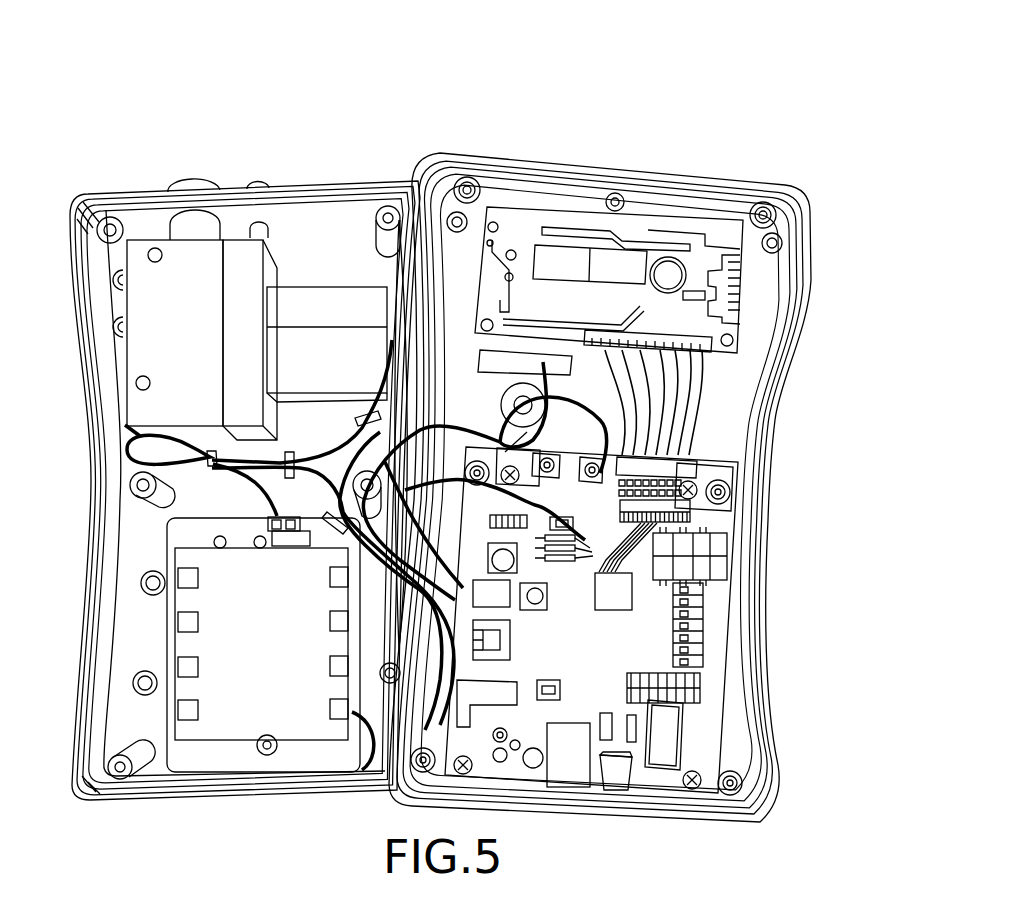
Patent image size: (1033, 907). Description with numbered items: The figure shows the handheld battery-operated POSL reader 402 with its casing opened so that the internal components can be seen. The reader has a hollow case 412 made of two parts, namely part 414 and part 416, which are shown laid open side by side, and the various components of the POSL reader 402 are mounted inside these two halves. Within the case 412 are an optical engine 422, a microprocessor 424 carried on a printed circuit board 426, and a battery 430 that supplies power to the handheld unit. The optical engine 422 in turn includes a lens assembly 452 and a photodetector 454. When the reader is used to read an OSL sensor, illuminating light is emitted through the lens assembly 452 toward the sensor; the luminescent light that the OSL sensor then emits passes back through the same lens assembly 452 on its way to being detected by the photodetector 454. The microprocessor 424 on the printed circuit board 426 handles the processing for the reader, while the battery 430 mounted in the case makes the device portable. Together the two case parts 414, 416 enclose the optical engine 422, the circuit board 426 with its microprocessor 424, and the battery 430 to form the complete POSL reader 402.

The POSL reader 402 is at (451, 41).
The hollow case 412 is at (738, 152).
The part 414 is at (291, 232).
The part 416 is at (559, 189).
The optical engine 422 is at (192, 296).
The microprocessor 424 is at (638, 604).
The printed circuit board 426 is at (708, 517).
The battery 430 is at (196, 624).
The lens assembly 452 is at (198, 182).
The photodetector 454 is at (319, 296).